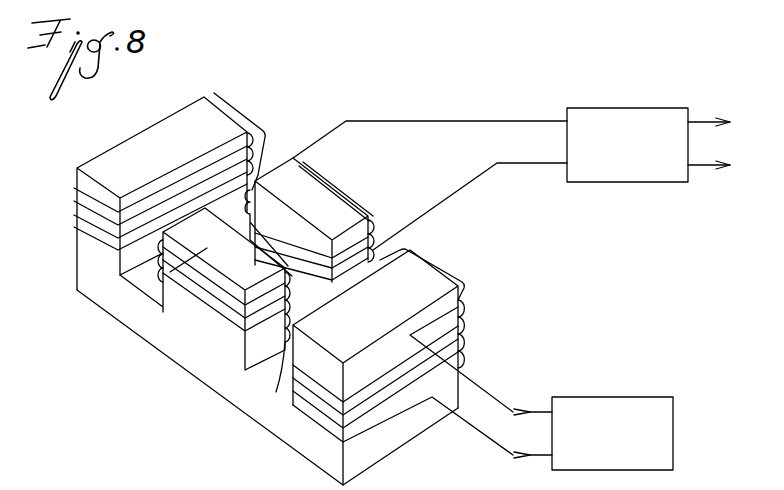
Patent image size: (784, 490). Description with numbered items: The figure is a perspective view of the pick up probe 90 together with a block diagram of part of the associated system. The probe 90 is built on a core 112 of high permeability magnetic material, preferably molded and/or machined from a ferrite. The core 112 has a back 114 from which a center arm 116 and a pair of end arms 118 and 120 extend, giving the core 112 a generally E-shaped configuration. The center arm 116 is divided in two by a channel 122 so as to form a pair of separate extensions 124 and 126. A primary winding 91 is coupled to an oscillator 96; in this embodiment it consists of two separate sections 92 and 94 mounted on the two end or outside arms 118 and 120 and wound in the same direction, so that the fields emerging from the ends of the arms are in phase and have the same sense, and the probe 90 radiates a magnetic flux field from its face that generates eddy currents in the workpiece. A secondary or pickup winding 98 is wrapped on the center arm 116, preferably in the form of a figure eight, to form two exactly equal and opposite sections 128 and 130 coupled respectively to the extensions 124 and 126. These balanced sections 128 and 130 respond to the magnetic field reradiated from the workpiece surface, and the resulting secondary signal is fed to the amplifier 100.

The probe 90 is at (197, 430).
The primary winding 91 is at (240, 101).
The section of primary winding 92 is at (72, 187).
The section of primary winding 94 is at (470, 335).
The oscillator 96 is at (605, 397).
The secondary winding 98 is at (192, 310).
The amplifier 100 is at (647, 107).
The core 112 is at (168, 137).
The back 114 is at (310, 440).
The center arm 116 is at (328, 208).
The end arm 118 is at (138, 154).
The end arm 120 is at (402, 271).
The channel 122 is at (319, 190).
The extension 124 is at (127, 312).
The extension 126 is at (279, 232).
The section of secondary winding 128 is at (233, 330).
The section of secondary winding 130 is at (380, 218).